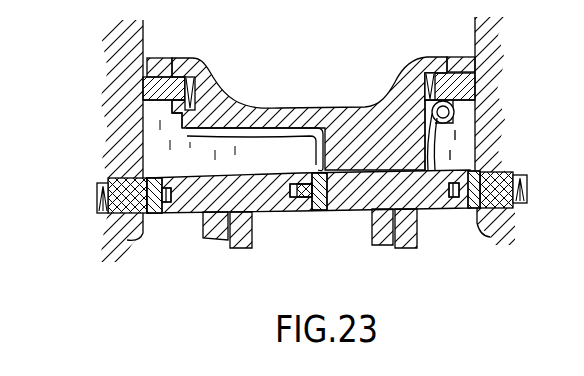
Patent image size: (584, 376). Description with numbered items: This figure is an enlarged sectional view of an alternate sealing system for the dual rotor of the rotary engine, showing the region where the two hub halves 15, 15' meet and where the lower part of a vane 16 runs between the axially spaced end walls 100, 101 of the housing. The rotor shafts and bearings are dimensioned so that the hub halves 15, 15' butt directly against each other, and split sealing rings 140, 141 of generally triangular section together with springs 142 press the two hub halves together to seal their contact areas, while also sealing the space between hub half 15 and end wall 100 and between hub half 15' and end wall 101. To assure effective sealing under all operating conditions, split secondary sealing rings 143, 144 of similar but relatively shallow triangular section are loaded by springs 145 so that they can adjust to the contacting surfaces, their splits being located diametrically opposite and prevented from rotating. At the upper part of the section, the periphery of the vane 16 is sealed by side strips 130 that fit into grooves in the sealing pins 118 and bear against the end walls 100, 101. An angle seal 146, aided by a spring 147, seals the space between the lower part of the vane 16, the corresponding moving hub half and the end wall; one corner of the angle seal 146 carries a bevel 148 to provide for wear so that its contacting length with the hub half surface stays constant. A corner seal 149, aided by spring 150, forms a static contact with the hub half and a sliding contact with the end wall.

The hub half 15 is at (308, 221).
The hub half 15' is at (260, 233).
The vane 16 is at (236, 103).
The end wall 100 is at (475, 37).
The end wall 101 is at (144, 43).
The sealing pin 118 is at (144, 83).
The side strip 130 is at (166, 58).
The sealing ring 140 is at (122, 183).
The sealing ring 141 is at (110, 216).
The spring 142 is at (97, 192).
The secondary sealing ring 143 is at (152, 180).
The secondary sealing ring 144 is at (166, 203).
The spring 145 is at (172, 193).
The angle seal 146 is at (147, 145).
The spring 147 is at (278, 130).
The bevel 148 is at (323, 191).
The corner seal 149 is at (470, 113).
The spring 150 is at (430, 128).